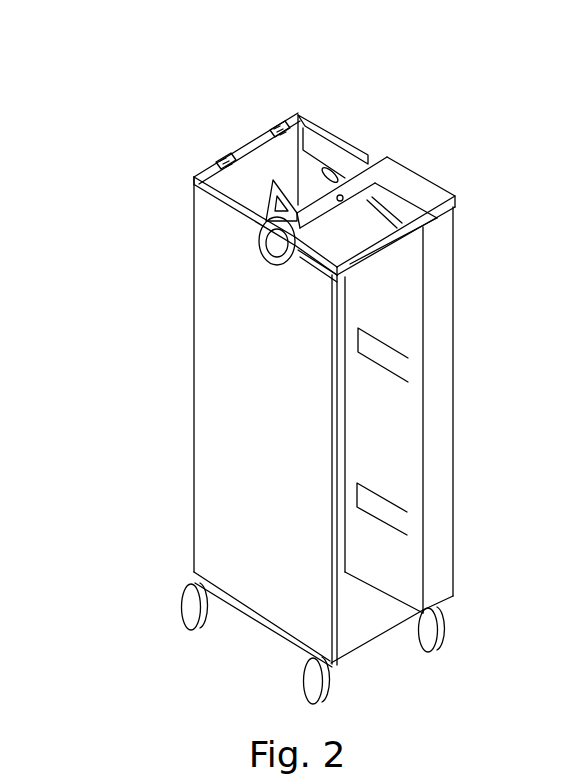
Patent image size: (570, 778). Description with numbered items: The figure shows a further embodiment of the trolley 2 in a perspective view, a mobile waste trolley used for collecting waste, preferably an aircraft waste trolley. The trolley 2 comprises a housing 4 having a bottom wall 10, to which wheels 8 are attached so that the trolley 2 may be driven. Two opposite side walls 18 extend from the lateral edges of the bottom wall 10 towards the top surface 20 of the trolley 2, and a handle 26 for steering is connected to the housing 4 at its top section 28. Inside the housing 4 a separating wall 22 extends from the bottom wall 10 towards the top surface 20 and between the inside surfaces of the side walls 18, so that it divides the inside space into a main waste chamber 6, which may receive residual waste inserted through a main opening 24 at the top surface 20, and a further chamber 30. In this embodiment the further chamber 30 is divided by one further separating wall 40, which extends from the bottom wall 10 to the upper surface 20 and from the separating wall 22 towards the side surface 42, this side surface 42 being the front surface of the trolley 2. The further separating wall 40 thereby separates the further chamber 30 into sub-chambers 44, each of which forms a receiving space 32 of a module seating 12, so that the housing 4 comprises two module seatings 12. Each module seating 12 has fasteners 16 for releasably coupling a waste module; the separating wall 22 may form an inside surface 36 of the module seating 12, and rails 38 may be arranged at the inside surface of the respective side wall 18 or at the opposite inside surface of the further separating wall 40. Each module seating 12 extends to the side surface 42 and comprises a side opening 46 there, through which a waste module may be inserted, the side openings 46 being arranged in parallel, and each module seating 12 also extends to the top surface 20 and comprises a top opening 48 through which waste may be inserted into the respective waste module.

The trolley 2 is at (468, 108).
The housing 4 is at (461, 214).
The main waste chamber 6 is at (247, 163).
The wheels 8 is at (192, 637).
The bottom wall 10 is at (262, 635).
The module seating 12 is at (439, 538).
The fasteners 16 is at (385, 528).
The side walls 18 is at (256, 532).
The top surface 20 is at (329, 114).
The separating wall 22 is at (293, 260).
The main opening 24 is at (265, 157).
The handle 26 is at (457, 199).
The top section 28 is at (212, 248).
The further chamber 30 is at (332, 274).
The receiving space 32 is at (442, 571).
The inside surface 36 is at (331, 255).
The rail 38 is at (385, 333).
The further separating wall 40 is at (399, 415).
The side surface 42 is at (452, 425).
The sub-chambers 44 is at (441, 373).
The side opening 46 is at (442, 507).
The top opening 48 is at (412, 195).